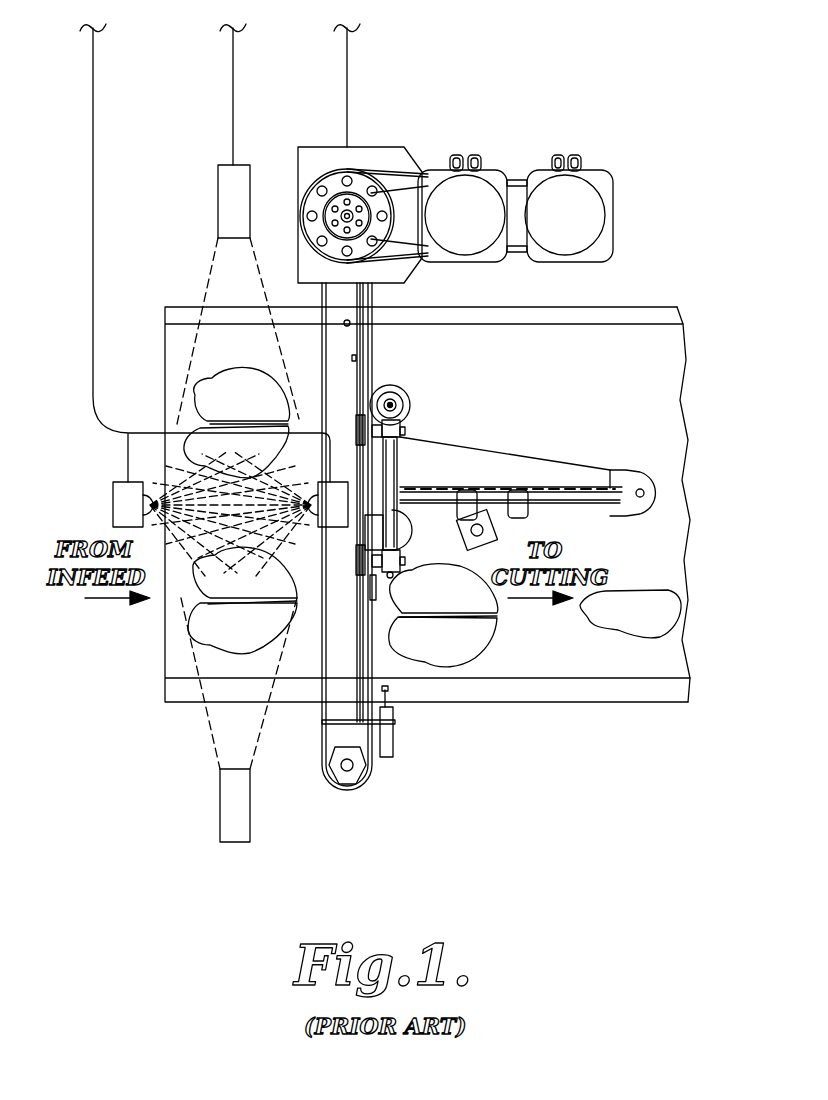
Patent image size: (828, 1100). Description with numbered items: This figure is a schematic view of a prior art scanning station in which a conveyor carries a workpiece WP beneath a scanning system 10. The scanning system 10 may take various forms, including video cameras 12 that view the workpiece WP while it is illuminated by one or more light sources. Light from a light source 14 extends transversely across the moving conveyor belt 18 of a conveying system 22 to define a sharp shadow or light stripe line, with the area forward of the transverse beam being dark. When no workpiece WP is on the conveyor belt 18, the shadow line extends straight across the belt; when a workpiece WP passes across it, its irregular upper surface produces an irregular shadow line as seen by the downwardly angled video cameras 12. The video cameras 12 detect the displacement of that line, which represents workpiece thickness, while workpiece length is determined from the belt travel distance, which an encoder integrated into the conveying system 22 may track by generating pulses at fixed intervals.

The scanning system 10 is at (70, 161).
The video cameras 12 is at (113, 497).
The light source 14 is at (247, 183).
The conveyor belt 18 is at (313, 345).
The conveying system 22 is at (667, 298).
The workpiece WP is at (226, 378).